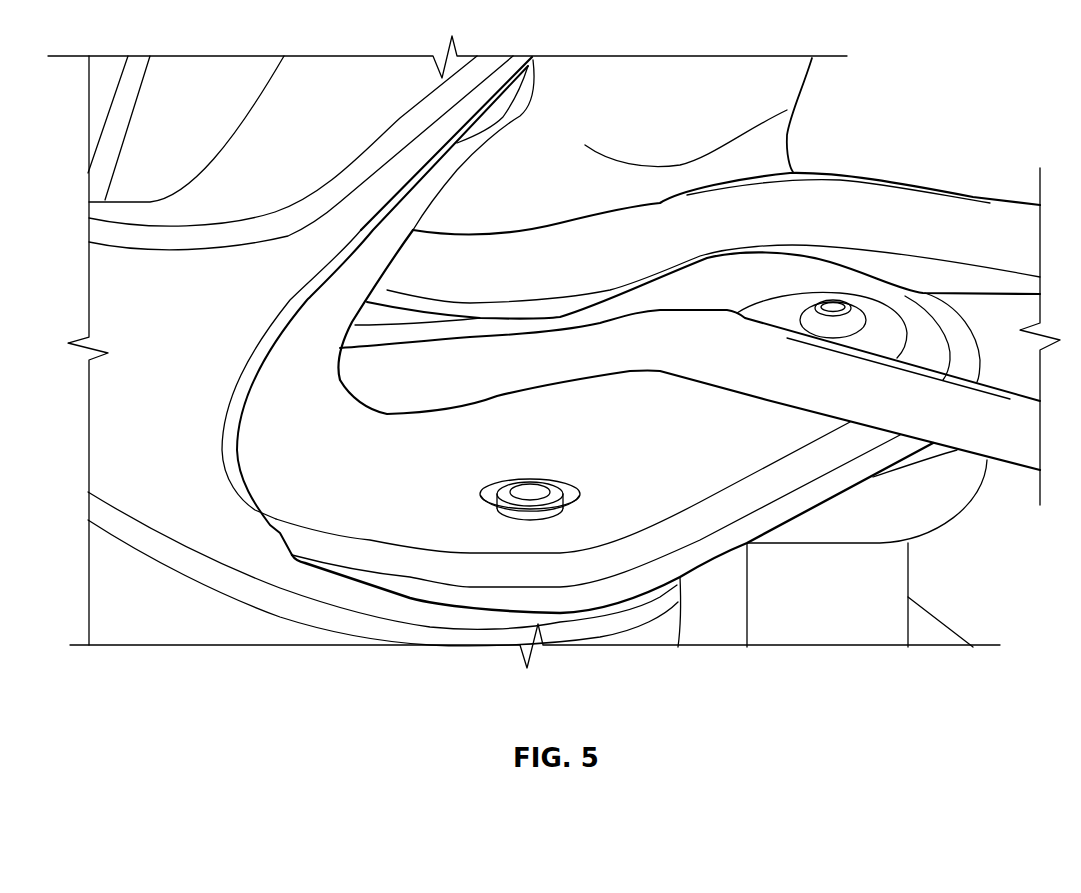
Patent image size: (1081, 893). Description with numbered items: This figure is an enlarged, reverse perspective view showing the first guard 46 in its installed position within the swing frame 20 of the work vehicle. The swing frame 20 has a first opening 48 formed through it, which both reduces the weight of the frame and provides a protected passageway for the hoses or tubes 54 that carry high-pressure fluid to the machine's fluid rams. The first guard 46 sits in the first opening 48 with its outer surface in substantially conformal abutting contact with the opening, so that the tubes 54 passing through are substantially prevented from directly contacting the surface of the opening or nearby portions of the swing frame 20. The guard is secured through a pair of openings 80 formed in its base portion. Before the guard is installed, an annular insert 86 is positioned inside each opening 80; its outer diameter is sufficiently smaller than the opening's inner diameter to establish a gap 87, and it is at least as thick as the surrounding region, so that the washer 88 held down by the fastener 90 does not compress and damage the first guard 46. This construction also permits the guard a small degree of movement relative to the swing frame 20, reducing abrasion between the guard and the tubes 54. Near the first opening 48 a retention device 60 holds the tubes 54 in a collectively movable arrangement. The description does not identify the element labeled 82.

The swing frame 20 is at (151, 338).
The first guard 46 is at (613, 453).
The first opening 48 is at (968, 64).
The hoses or tubes 54 is at (1000, 203).
The retention device 60 is at (232, 462).
The openings 80 is at (500, 513).
The flange 82 is at (327, 573).
The annular insert 86 is at (493, 517).
The gap 87 is at (567, 507).
The washer 88 is at (925, 322).
The fastener 90 is at (857, 317).